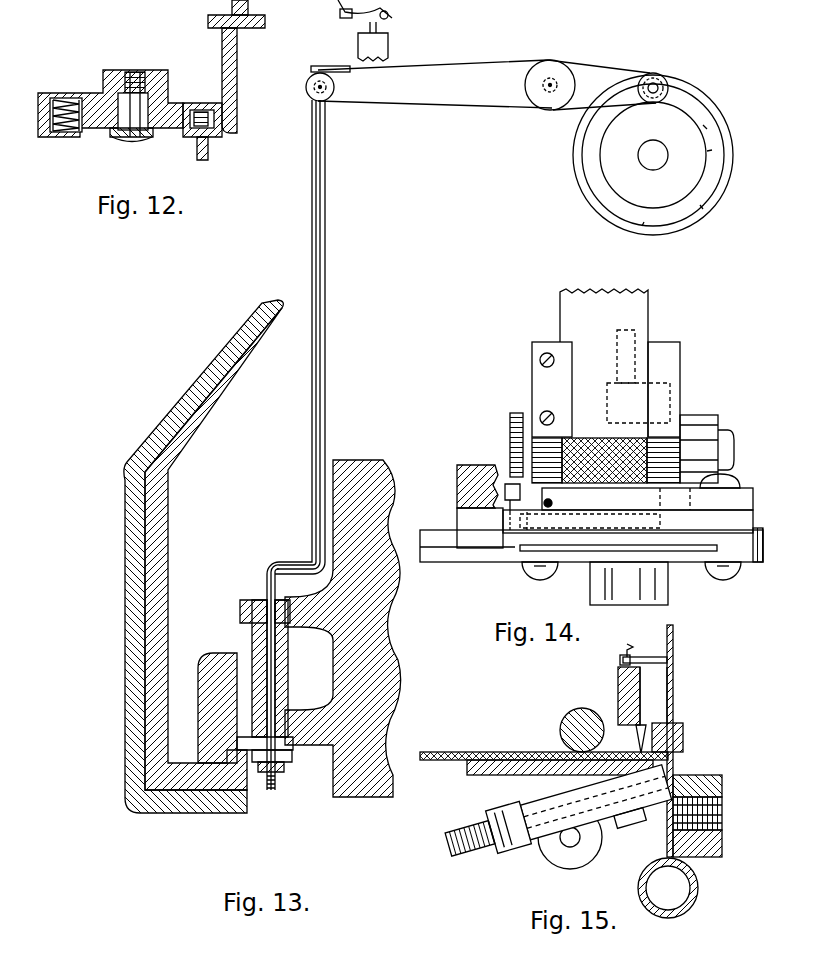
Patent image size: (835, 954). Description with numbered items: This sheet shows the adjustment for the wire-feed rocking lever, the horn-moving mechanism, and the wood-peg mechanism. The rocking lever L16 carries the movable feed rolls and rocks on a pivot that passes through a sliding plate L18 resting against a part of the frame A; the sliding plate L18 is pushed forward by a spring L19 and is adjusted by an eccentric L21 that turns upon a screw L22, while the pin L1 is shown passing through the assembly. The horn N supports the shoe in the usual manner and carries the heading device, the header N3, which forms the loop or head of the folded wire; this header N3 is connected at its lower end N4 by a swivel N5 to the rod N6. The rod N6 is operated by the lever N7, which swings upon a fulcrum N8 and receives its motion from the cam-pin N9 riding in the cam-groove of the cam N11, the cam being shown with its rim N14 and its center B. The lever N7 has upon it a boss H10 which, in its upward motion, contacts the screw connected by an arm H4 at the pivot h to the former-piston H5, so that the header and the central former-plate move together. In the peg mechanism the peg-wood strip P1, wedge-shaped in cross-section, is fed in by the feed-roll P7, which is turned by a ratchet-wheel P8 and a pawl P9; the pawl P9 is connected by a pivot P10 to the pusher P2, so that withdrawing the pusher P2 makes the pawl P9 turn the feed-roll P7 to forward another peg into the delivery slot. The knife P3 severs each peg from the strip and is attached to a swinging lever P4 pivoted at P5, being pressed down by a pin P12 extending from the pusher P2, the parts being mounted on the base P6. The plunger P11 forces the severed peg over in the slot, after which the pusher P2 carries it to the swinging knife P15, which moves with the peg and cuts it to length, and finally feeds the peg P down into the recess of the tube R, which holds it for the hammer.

In FIG. 12, the sliding plate L18 is at (102, 132).
In FIG. 12, the spring L19 is at (65, 96).
In FIG. 12, the rocking lever L16 is at (128, 70).
In FIG. 12, the pin L' L1 is at (131, 107).
In FIG. 12, the screw L22 is at (202, 108).
In FIG. 12, the eccentric L21 is at (218, 139).
In FIG. 12, the frame A is at (222, 52).
In FIG. 13, the frame A is at (299, 628).
In FIG. 13, the lever arm H4 is at (340, 15).
In FIG. 13, the pivot h is at (390, 14).
In FIG. 13, the former-piston H5 is at (388, 45).
In FIG. 13, the boss H10 is at (312, 68).
In FIG. 13, the lever N7 is at (435, 84).
In FIG. 13, the fulcrum N8 is at (556, 70).
In FIG. 13, the cam-pin N9 is at (660, 72).
In FIG. 13, the wheel hub B is at (653, 155).
In FIG. 13, the cam N11 is at (667, 155).
In FIG. 13, the rim notch N14 is at (653, 155).
In FIG. 13, the rod N6 is at (314, 337).
In FIG. 13, the lower end of header N4 is at (267, 790).
In FIG. 13, the swivel N5 is at (284, 768).
In FIG. 13, the horn N is at (189, 556).
In FIG. 13, the header N3 is at (272, 302).
In FIG. 14, the peg-wood strip P1 is at (606, 363).
In FIG. 15, the peg-wood strip P1 is at (544, 750).
In FIG. 14, the feed-roll P7 is at (592, 438).
In FIG. 15, the feed-roll P7 is at (581, 708).
In FIG. 14, the ratchet-wheel P8 is at (516, 413).
In FIG. 14, the pawl P9 is at (507, 490).
In FIG. 15, the pawl P9 is at (675, 650).
In FIG. 14, the pivot P5 is at (730, 480).
In FIG. 14, the swinging lever P4 is at (647, 499).
In FIG. 15, the swinging lever P4 is at (620, 694).
In FIG. 14, the pin P12 is at (553, 503).
In FIG. 15, the pin P12 is at (619, 646).
In FIG. 14, the knife P3 is at (652, 515).
In FIG. 15, the knife P3 is at (651, 710).
In FIG. 14, the plunger P11 is at (581, 543).
In FIG. 14, the pusher P2 is at (520, 522).
In FIG. 15, the pusher P2 is at (675, 690).
In FIG. 14, the block P6 is at (580, 565).
In FIG. 15, the pivot P10 is at (690, 754).
In FIG. 15, the peg P is at (690, 862).
In FIG. 15, the tube R is at (698, 890).
In FIG. 15, the swinging knife P15 is at (558, 818).